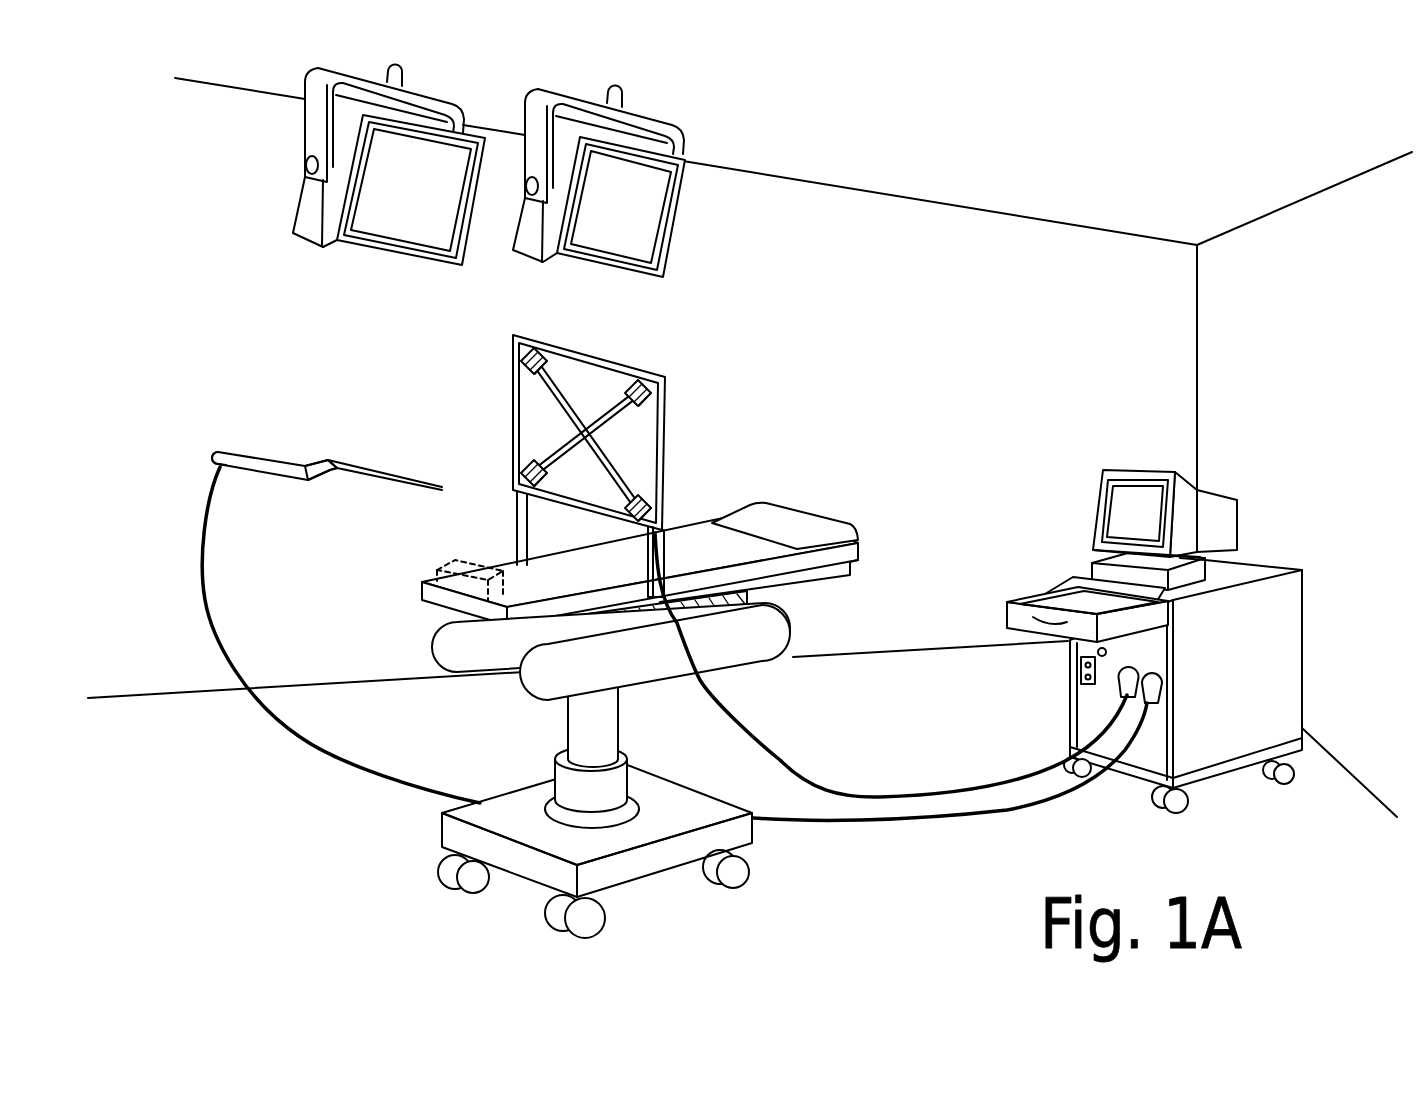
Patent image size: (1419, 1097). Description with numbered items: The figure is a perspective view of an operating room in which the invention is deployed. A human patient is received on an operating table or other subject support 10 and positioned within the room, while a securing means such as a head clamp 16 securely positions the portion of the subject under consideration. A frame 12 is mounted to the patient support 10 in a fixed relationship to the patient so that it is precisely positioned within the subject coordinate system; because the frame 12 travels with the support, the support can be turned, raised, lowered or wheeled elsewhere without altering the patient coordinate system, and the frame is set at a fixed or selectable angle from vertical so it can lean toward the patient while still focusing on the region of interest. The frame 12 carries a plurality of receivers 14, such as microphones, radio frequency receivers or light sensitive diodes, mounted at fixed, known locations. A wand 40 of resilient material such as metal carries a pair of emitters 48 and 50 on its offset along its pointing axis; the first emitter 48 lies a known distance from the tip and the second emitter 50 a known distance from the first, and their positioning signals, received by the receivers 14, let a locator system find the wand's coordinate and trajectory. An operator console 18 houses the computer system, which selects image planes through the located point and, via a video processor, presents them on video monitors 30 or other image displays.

The operating table 10 is at (705, 545).
The frame 12 is at (595, 352).
The receivers 14 is at (523, 356).
The head clamp 16 is at (438, 570).
The operator console 18 is at (1053, 595).
The video monitors 30 is at (595, 223).
The wand 40 is at (355, 468).
The first emitter 48 is at (231, 448).
The second emitter 50 is at (306, 462).